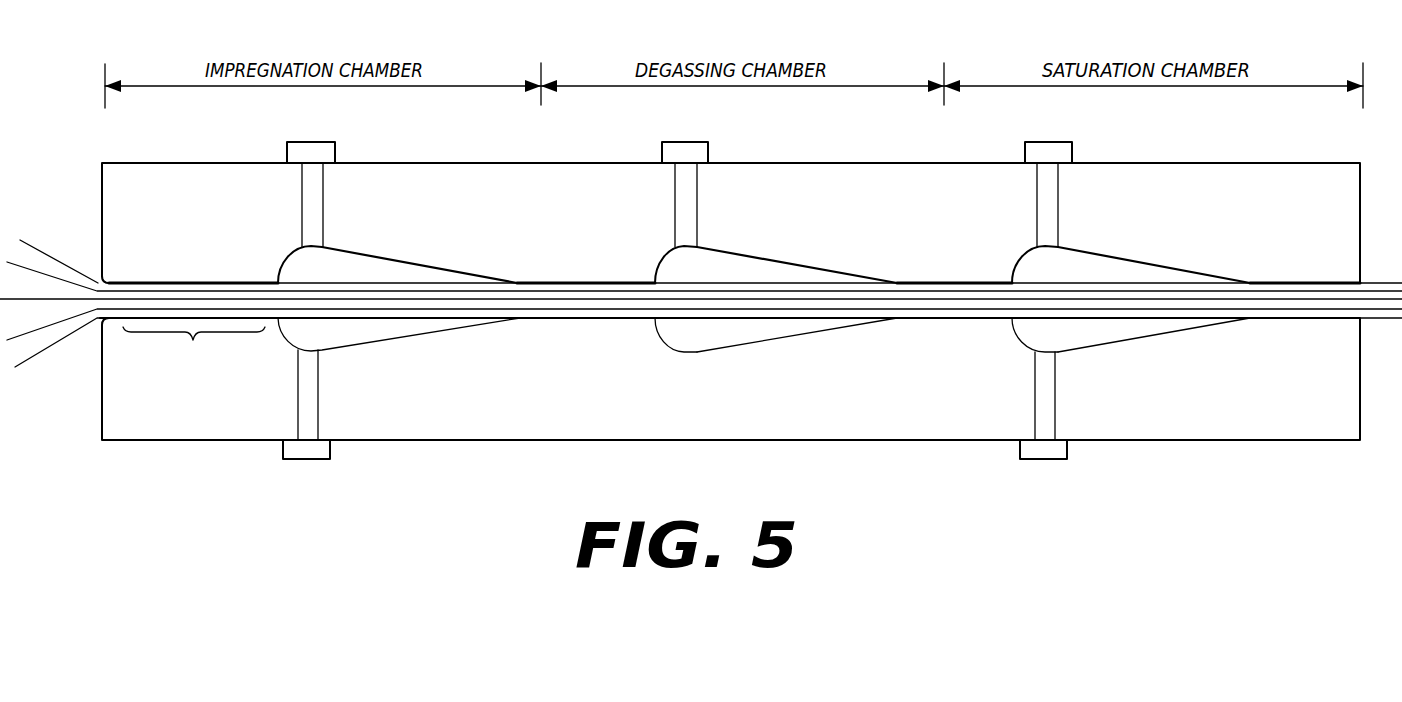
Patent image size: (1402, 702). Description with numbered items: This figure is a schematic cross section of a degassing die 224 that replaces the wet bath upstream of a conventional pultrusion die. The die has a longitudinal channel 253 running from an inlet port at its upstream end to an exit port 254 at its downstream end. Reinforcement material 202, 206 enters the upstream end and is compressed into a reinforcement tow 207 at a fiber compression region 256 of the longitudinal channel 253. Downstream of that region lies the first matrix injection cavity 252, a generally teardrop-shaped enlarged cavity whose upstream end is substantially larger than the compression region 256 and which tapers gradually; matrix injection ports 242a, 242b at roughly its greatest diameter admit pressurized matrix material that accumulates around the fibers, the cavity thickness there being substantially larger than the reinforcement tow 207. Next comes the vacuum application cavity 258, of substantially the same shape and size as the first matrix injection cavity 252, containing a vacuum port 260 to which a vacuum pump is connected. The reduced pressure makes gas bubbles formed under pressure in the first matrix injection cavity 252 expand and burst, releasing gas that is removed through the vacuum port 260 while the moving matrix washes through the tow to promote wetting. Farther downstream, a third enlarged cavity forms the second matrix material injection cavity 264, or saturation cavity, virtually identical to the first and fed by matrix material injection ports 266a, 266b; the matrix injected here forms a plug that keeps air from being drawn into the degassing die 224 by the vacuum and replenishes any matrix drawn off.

The reinforcement material 202 is at (43, 273).
The reinforcement material 206 is at (32, 247).
The reinforcement tow 207 is at (120, 279).
The degassing die 224 is at (100, 418).
The matrix injection port 242a is at (318, 350).
The matrix injection port 242b is at (322, 247).
The first matrix injection cavity 252 is at (405, 262).
The longitudinal channel 253 is at (187, 281).
The exit port 254 is at (1352, 281).
The fiber compression region 256 is at (193, 340).
The vacuum application cavity 258 is at (763, 272).
The vacuum port 260 is at (700, 247).
The second matrix material injection cavity 264 is at (1140, 262).
The matrix material injection port 266a is at (1058, 352).
The matrix material injection port 266b is at (1060, 247).